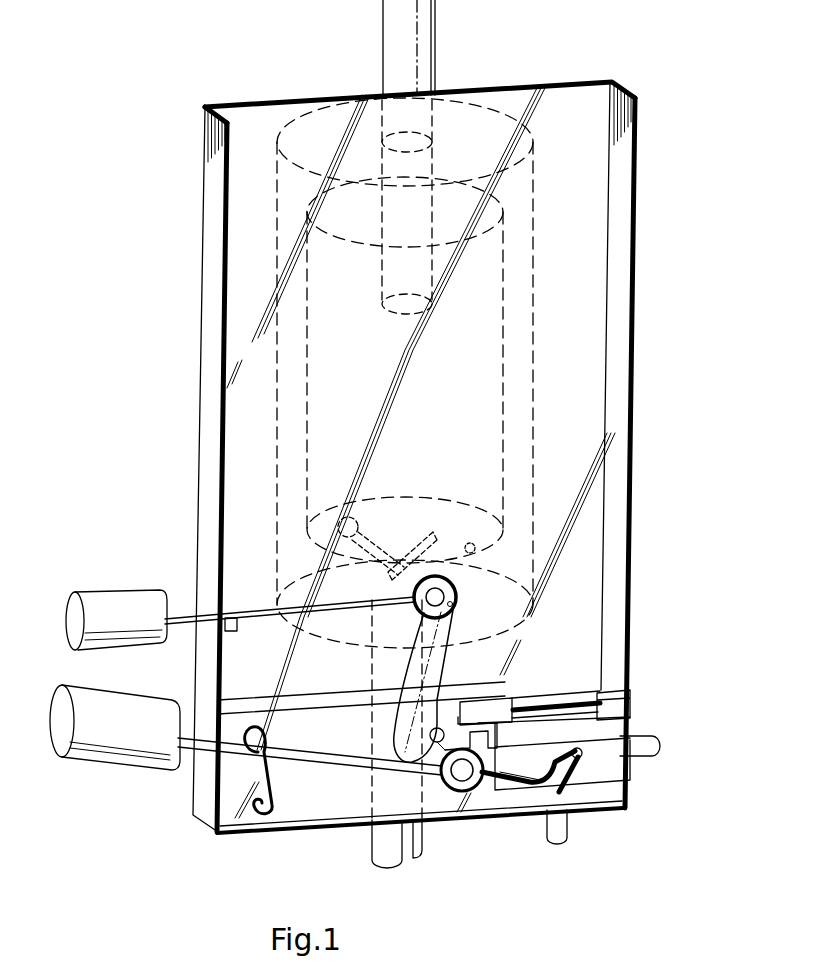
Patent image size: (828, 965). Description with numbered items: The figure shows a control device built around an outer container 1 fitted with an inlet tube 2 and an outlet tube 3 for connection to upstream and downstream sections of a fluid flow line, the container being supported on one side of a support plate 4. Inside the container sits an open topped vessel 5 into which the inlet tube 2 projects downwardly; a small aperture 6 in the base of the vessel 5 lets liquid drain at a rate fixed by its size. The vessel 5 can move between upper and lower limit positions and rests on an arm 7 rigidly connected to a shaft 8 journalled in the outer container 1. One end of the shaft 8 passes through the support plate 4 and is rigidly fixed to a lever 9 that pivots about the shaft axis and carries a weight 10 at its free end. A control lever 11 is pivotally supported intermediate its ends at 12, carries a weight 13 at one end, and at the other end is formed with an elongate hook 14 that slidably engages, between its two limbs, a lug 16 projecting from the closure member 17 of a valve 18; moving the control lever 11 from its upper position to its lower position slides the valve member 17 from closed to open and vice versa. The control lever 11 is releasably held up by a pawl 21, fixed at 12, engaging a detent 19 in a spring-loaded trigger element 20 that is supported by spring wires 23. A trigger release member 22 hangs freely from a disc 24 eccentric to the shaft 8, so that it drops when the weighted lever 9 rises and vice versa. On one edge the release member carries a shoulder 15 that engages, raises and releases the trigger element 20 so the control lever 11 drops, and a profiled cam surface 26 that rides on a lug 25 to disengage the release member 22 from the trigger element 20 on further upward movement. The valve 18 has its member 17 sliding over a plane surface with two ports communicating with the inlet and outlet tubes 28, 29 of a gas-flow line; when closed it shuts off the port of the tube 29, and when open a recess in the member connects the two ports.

The outer container 1 is at (533, 220).
The inlet tube 2 is at (437, 48).
The outlet tube 3 is at (373, 849).
The support plate 4 is at (588, 302).
The open topped vessel 5 is at (503, 358).
The aperture 6 is at (470, 543).
The arm 7 is at (432, 540).
The shaft 8 is at (363, 540).
The lever 9 is at (178, 612).
The weight 10 is at (105, 598).
The control lever 11 is at (185, 750).
The pivot 12 is at (455, 777).
The weight 13 is at (102, 765).
The elongate hook 14 is at (583, 767).
The shoulder 15 is at (448, 715).
The lug 16 is at (582, 770).
The closure member 17 is at (532, 777).
The valve 18 is at (645, 719).
The detent 19 is at (490, 687).
The trigger element 20 is at (500, 703).
The pawl 21 is at (440, 745).
The trigger release member 22 is at (413, 685).
The spring wires 23 is at (598, 697).
The disc 24 is at (458, 596).
The lug 25 is at (430, 740).
The profiled cam surface 26 is at (430, 722).
The inlet tube 28 is at (550, 833).
The outlet tube 29 is at (654, 748).